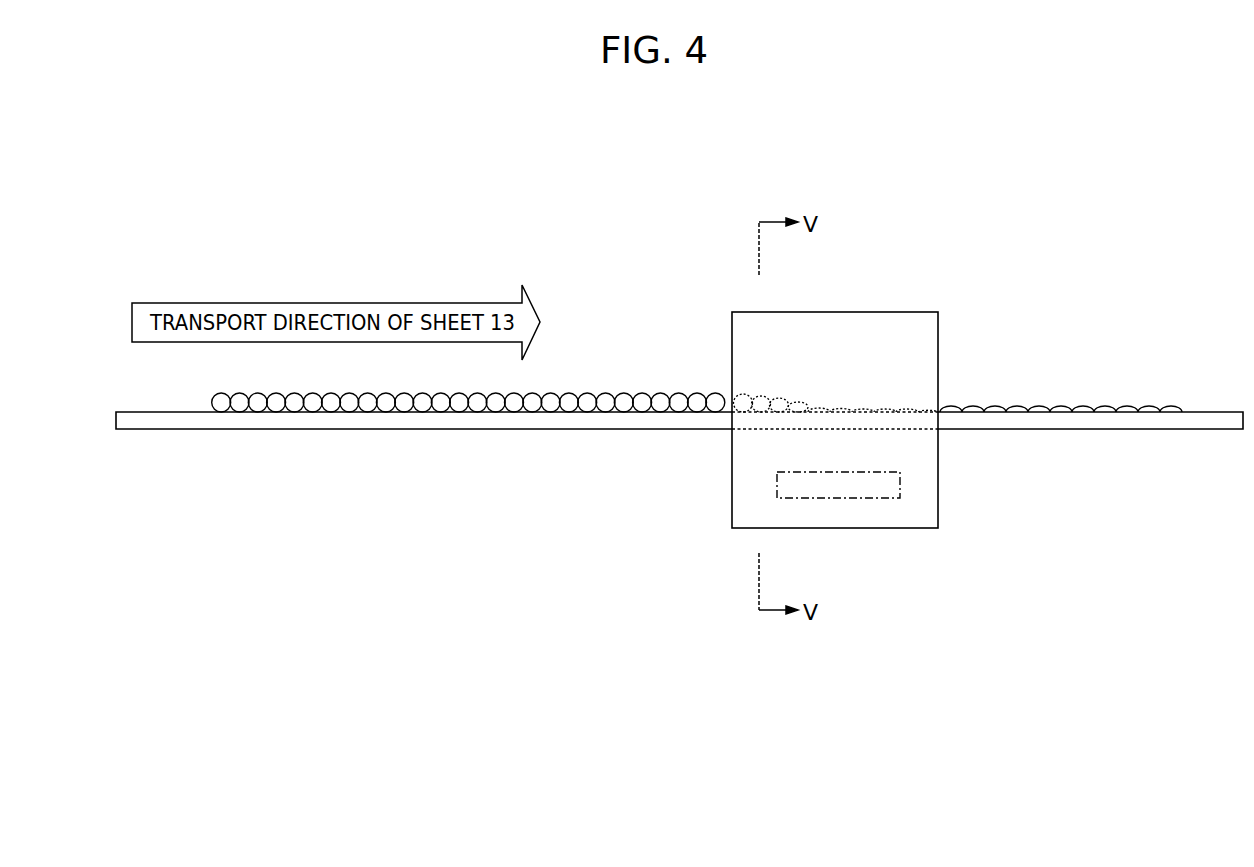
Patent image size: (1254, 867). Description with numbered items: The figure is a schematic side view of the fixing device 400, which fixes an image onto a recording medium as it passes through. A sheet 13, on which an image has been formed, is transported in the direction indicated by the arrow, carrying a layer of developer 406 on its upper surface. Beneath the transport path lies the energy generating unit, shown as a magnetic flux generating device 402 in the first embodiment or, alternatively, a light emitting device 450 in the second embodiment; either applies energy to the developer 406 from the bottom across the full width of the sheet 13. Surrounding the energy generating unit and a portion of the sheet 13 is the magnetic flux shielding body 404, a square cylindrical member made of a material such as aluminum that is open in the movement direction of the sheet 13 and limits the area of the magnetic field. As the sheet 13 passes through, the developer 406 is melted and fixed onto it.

The sheet 13 is at (130, 430).
The fixing device 400 is at (892, 358).
The magnetic flux generating device 402 is at (915, 479).
The magnetic flux shielding body 404 is at (940, 326).
The developer 406 is at (572, 366).
The light emitting device 450 is at (900, 481).